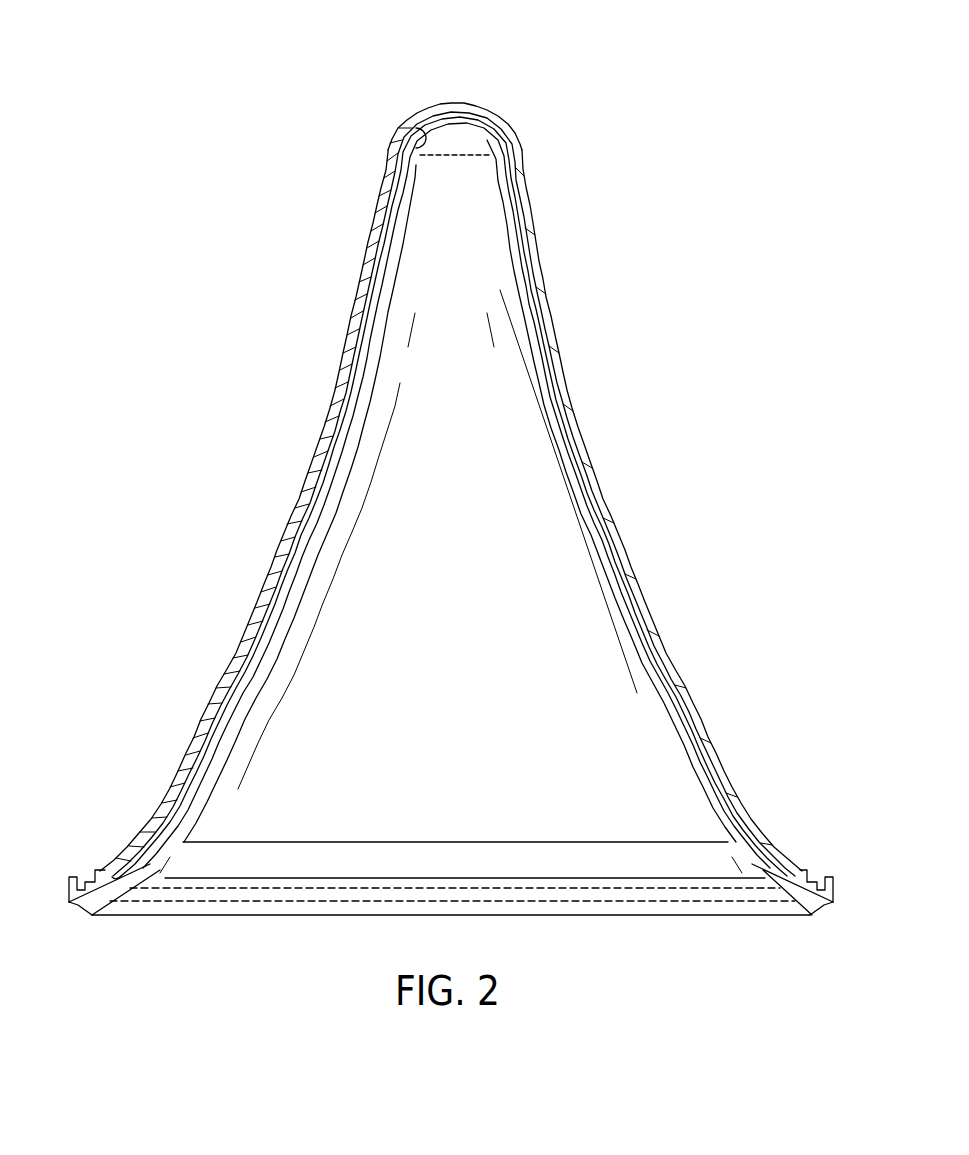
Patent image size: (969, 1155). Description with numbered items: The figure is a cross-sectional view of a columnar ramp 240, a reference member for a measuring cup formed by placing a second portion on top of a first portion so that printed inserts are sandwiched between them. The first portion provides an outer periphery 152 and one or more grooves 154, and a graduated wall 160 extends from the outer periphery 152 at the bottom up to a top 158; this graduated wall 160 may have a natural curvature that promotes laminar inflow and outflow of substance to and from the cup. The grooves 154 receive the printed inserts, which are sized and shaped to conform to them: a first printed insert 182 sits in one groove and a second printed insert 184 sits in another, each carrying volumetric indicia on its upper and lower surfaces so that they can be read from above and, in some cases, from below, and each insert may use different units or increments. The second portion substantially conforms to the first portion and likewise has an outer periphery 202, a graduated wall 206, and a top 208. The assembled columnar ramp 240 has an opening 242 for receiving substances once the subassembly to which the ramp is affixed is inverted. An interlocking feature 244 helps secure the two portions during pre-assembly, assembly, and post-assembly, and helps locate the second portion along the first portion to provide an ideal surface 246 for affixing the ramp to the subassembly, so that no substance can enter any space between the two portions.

The columnar ramp 240 is at (148, 72).
The opening 242 is at (244, 942).
The interlocking feature 244 is at (77, 908).
The surface 246 is at (73, 881).
The outer periphery 152 is at (840, 906).
The grooves 154 is at (510, 146).
The top 158 is at (398, 151).
The graduated wall 160 is at (304, 572).
The first printed insert 182 is at (320, 466).
The second printed insert 184 is at (533, 286).
The outer periphery 202 is at (822, 883).
The graduated wall 206 is at (325, 426).
The top 208 is at (470, 100).